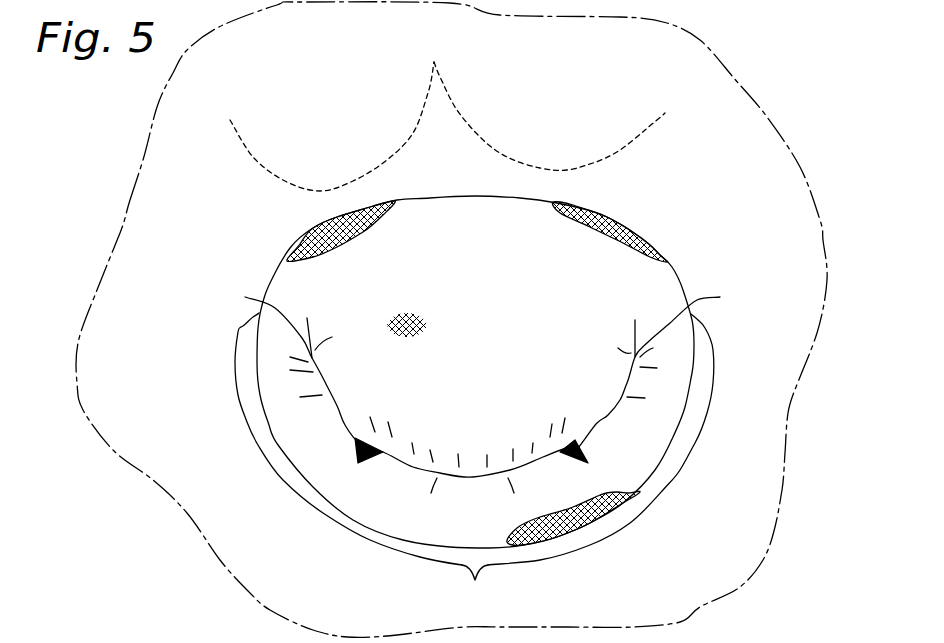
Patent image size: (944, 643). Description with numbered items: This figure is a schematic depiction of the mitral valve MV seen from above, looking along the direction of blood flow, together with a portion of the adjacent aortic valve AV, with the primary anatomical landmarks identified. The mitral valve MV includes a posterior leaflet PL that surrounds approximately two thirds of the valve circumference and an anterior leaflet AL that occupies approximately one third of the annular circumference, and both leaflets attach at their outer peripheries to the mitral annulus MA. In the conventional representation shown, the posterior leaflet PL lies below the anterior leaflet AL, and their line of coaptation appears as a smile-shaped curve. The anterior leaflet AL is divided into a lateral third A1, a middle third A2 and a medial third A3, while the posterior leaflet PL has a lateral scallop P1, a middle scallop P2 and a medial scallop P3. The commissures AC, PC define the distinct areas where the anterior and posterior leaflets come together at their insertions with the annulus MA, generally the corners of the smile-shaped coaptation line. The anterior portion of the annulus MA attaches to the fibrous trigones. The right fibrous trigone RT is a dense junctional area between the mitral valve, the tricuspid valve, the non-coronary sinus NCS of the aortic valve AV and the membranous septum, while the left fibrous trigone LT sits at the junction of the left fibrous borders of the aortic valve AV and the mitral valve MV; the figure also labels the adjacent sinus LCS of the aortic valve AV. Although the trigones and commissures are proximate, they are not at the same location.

The aortic valve AV is at (447, 100).
The left coronary sinus LCS is at (332, 126).
The non-coronary sinus NCS is at (549, 116).
The mitral valve MV is at (252, 262).
The mitral annulus MA is at (672, 268).
The left fibrous trigone LT is at (315, 227).
The right fibrous trigone RT is at (622, 218).
The anterior commissure AC is at (265, 338).
The posterior commissure PC is at (687, 336).
The anterior leaflet AL is at (439, 335).
The lateral third of anterior leaflet A1 is at (337, 392).
The middle third of anterior leaflet A2 is at (471, 439).
The medial third of anterior leaflet A3 is at (613, 392).
The lateral scallop P1 is at (327, 402).
The middle scallop P2 is at (535, 511).
The medial scallop P3 is at (620, 400).
The posterior leaflet PL is at (474, 468).